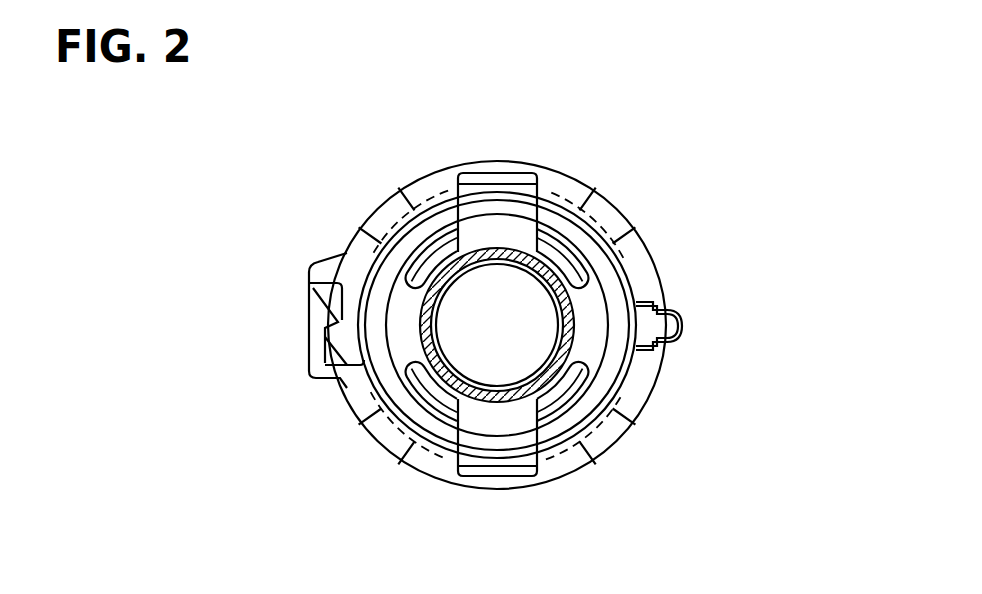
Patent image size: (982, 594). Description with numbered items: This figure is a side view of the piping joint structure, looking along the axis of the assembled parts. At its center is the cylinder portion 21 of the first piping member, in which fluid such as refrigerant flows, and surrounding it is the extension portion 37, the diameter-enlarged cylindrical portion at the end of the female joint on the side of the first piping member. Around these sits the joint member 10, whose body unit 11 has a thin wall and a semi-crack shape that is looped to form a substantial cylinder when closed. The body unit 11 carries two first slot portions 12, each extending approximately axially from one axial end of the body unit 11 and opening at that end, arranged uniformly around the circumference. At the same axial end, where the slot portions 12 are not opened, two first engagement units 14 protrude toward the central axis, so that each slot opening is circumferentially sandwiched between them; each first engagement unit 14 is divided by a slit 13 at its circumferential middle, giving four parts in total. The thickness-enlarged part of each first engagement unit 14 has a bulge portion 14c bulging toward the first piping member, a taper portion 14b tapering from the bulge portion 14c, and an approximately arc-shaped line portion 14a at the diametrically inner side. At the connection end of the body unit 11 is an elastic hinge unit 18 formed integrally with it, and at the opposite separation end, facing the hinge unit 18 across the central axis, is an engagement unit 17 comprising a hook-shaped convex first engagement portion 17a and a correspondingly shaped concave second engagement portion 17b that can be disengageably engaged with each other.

The joint member 10 is at (438, 158).
The body unit 11 is at (648, 384).
The first slot portion 12 is at (367, 413).
The slit 13 is at (485, 398).
The first engagement unit 14 is at (418, 457).
The line portion 14a is at (535, 397).
The taper portion 14b is at (560, 393).
The bulge portion 14c is at (585, 400).
The engagement unit 17 is at (178, 324).
The first engagement portion 17a is at (342, 338).
The second engagement portion 17b is at (325, 360).
The elastic hinge unit 18 is at (686, 320).
The cylinder portion 21 is at (582, 338).
The extension portion 37 is at (607, 278).